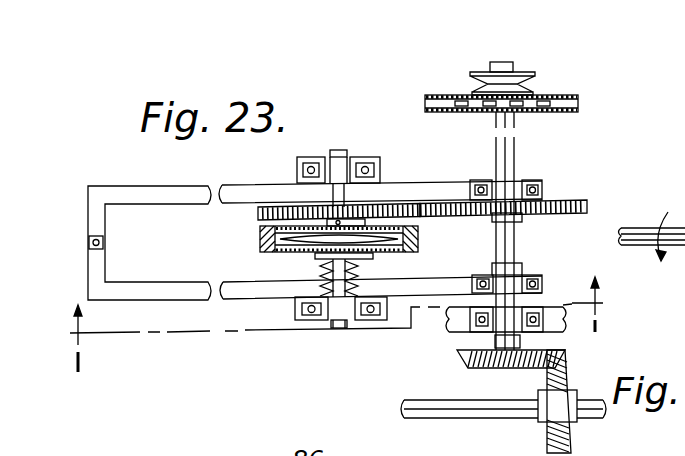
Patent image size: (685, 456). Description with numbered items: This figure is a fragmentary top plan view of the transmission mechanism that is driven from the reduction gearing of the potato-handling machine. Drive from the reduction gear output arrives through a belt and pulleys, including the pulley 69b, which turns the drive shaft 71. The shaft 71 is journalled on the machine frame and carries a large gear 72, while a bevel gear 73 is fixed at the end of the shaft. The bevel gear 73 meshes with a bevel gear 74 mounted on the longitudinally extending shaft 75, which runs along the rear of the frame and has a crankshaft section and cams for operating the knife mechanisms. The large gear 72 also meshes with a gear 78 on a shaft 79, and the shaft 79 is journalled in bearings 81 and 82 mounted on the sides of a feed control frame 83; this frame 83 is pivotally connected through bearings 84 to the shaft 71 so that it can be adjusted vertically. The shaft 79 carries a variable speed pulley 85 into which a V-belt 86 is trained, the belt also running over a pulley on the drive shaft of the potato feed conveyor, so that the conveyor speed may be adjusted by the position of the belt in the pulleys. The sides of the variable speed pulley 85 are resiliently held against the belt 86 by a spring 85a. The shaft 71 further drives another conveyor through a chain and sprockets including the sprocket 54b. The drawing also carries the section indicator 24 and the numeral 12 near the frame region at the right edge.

The frame / bed 12 is at (684, 362).
The section line 24- 24 is at (340, 324).
The sprocket 54b is at (578, 103).
The pulley 69b is at (532, 73).
The drive shaft 71 is at (516, 156).
The large gear 72 is at (570, 201).
The bevel gear 73 is at (468, 356).
The bevel gear 74 is at (568, 366).
The longitudinally extending shaft 75 is at (482, 409).
The gear 78 is at (258, 210).
The shaft 79 is at (330, 192).
The bearing 81 is at (333, 168).
The bearing 82 is at (330, 320).
The feed control frame 83 is at (189, 285).
The bearings 84 is at (510, 187).
The variable speed pulley 85 is at (305, 254).
The spring 85a is at (358, 263).
The V-belt 86 is at (260, 240).